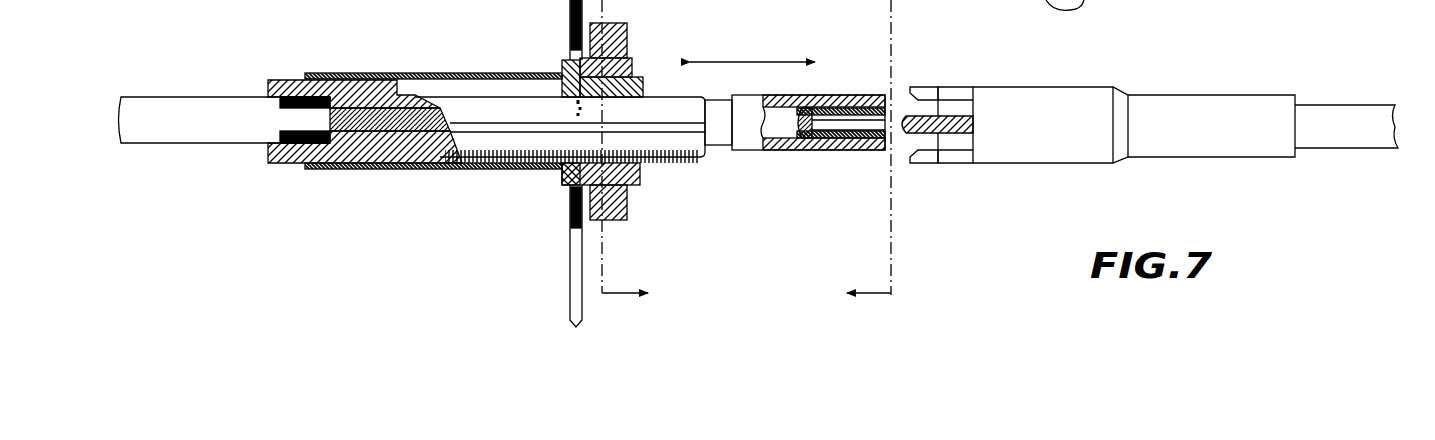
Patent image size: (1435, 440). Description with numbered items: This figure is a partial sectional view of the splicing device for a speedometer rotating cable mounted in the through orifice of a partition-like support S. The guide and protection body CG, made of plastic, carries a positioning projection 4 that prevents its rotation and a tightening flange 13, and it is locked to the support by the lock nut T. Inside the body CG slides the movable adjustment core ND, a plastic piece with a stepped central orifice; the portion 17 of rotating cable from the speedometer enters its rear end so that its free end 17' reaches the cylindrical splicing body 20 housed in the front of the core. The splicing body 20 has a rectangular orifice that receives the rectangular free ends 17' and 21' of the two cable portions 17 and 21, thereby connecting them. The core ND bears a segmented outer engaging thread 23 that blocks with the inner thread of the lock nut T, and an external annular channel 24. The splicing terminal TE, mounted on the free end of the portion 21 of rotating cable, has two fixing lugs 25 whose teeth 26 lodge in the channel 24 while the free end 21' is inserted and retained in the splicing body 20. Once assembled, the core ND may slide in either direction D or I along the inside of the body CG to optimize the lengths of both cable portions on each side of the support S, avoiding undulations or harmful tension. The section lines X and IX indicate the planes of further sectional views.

The portion of rotating cable 17 is at (225, 90).
The movable adjustment core ND is at (280, 165).
The guide and protection body CG is at (421, 35).
The segmented outer engaging thread 23 is at (673, 168).
The lock nut T is at (638, 60).
The positioning projection 4 is at (560, 70).
The tightening flange 13 is at (563, 186).
The support S is at (566, 277).
The section axis X is at (624, 168).
The direction I is at (701, 52).
The direction D is at (830, 52).
The external annular channel 24 is at (715, 147).
The cylindrical splicing body 20 is at (848, 150).
The free end of the portion of rotating cable 17' is at (828, 172).
The section axis IX is at (886, 153).
The teeth 26 is at (920, 87).
The free end of the portion of rotating cable 21' is at (937, 176).
The fixing lugs 25 is at (961, 165).
The splicing terminal TE is at (1182, 64).
The portion of rotating cable 21 is at (1346, 88).